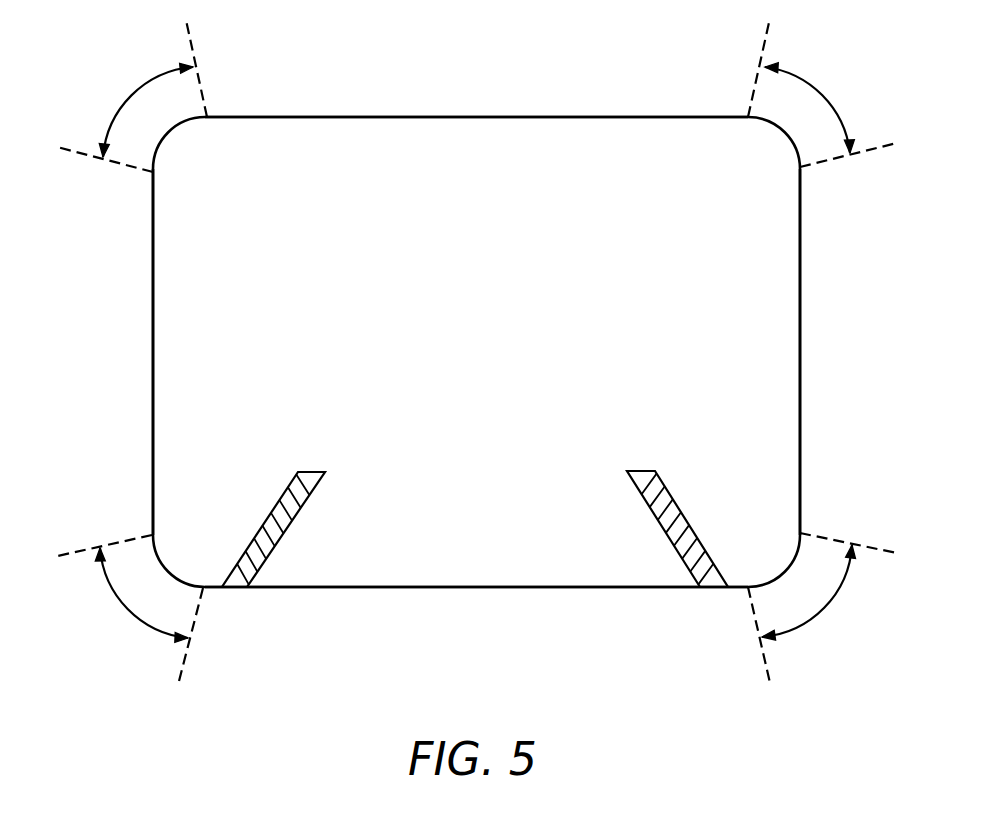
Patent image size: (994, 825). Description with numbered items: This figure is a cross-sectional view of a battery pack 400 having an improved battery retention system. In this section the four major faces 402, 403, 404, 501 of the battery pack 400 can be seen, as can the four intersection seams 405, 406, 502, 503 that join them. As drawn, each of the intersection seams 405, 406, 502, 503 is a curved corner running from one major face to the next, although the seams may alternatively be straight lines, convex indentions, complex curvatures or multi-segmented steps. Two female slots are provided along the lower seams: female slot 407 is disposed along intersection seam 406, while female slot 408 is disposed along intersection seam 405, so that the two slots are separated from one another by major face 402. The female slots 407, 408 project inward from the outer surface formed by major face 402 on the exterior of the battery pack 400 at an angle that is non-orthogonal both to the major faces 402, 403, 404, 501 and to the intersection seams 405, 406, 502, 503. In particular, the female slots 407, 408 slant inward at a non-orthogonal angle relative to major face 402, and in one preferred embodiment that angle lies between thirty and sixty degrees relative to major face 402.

The battery pack 400 is at (489, 344).
The major face 501 is at (477, 116).
The major face 402 is at (476, 589).
The major face 403 is at (801, 350).
The major face 404 is at (152, 381).
The intersection seam 405 is at (822, 607).
The intersection seam 406 is at (128, 612).
The female slot 407 is at (312, 470).
The female slot 408 is at (639, 469).
The intersection seam 502 is at (133, 95).
The intersection seam 503 is at (818, 88).